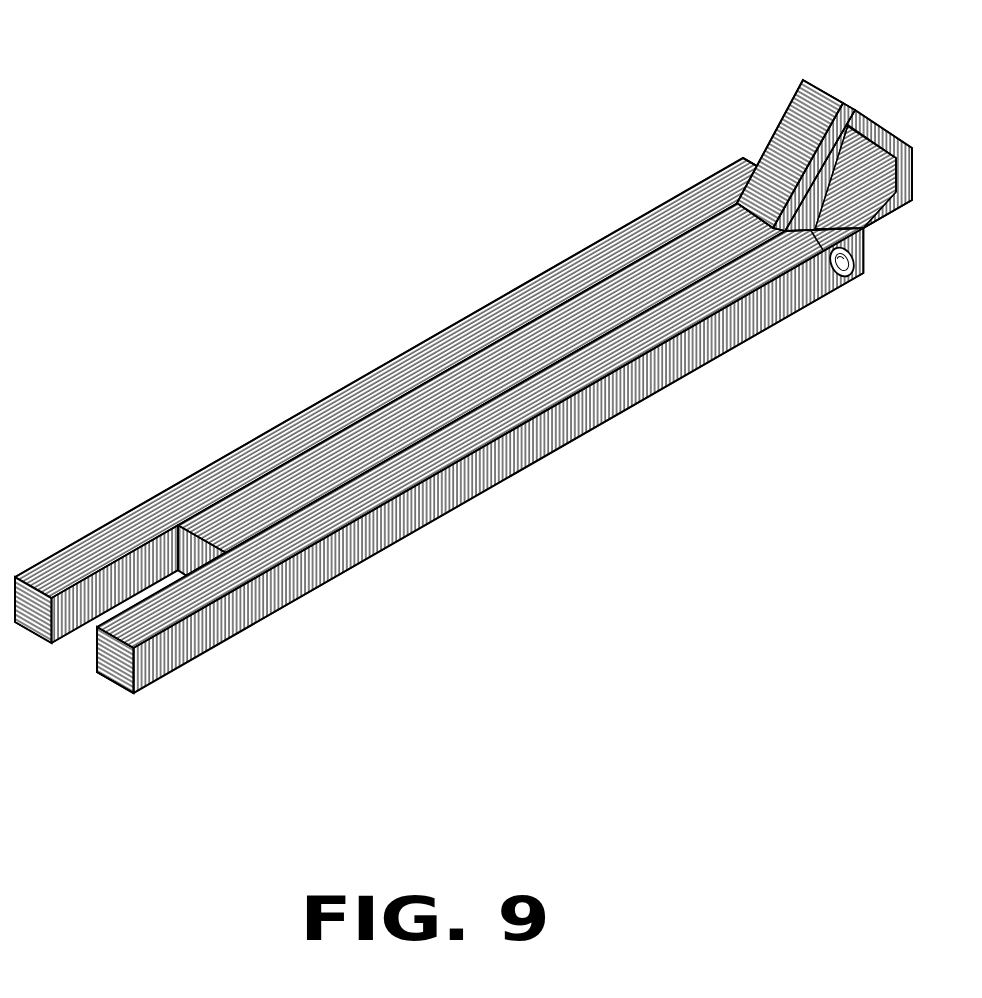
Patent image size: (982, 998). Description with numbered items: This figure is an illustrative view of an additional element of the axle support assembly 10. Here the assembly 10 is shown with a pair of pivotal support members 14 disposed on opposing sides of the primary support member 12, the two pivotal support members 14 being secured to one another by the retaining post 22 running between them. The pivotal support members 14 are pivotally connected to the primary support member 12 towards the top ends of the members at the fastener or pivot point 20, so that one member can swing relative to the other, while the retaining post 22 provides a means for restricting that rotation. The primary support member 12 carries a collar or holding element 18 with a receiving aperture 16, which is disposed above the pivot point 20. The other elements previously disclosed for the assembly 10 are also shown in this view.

The axle support assembly 10 is at (360, 193).
The primary support member 12 is at (300, 478).
The pivoting support member 14 is at (498, 420).
The receiving aperture 16 is at (845, 170).
The collar 18 is at (803, 80).
The pivot point 20 is at (745, 160).
The retaining post 22 is at (178, 540).